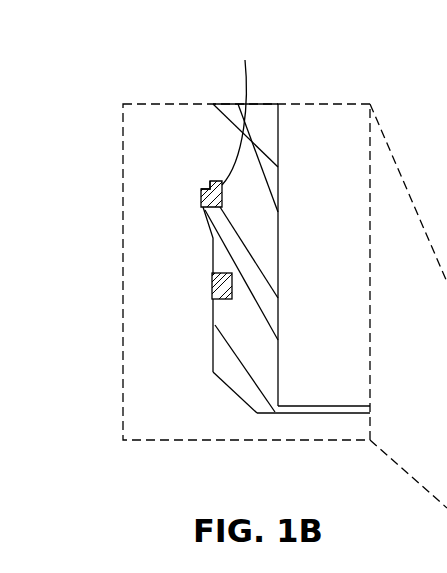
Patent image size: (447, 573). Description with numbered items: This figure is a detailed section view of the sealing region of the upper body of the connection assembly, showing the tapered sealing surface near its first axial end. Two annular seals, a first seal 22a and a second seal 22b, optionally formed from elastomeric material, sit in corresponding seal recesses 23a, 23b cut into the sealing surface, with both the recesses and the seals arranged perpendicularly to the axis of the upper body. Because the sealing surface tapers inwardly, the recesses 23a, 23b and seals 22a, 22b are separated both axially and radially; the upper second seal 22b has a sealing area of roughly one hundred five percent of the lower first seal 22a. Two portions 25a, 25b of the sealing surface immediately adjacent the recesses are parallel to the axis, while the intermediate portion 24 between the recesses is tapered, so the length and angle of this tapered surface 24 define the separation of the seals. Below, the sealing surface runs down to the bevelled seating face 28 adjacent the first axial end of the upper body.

The first seal 22a is at (212, 288).
The second seal 22b is at (203, 198).
The first seal recess 23a is at (233, 288).
The second seal recess 23b is at (243, 104).
The intermediate portion 24 is at (213, 250).
The first portion of sealing surface 25a is at (215, 342).
The second portion of sealing surface 25b is at (207, 181).
The bevelled seating face 28 is at (230, 387).